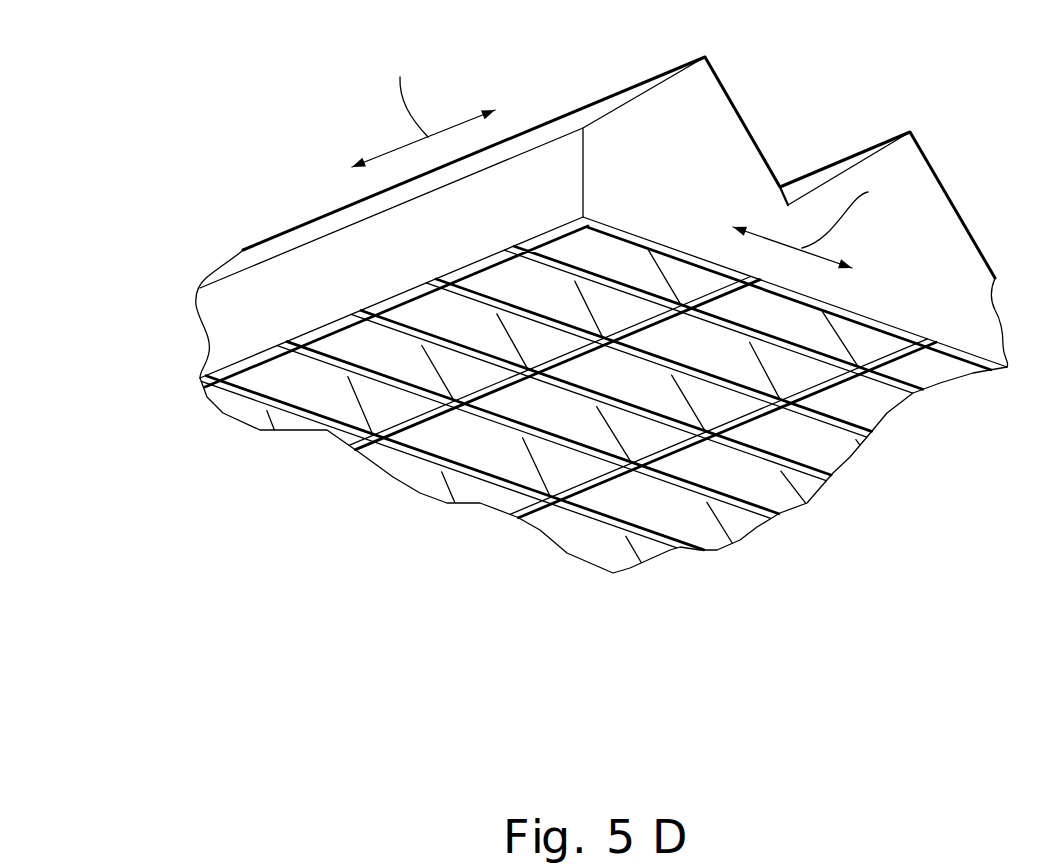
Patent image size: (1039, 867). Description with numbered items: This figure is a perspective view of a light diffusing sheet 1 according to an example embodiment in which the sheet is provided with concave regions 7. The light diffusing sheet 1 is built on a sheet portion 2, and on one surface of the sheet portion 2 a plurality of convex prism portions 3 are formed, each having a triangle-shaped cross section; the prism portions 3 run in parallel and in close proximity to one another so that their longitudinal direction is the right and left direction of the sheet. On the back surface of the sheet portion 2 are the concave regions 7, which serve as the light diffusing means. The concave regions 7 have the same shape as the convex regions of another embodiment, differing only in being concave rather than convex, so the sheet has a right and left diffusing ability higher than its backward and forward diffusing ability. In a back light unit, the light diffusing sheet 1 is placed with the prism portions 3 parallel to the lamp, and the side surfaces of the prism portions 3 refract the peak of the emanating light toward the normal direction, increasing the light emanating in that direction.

The light diffusing sheet 1 is at (540, 391).
The sheet portion 2 is at (218, 325).
The convex prism portions 3 is at (722, 123).
The concave regions 7 is at (577, 413).